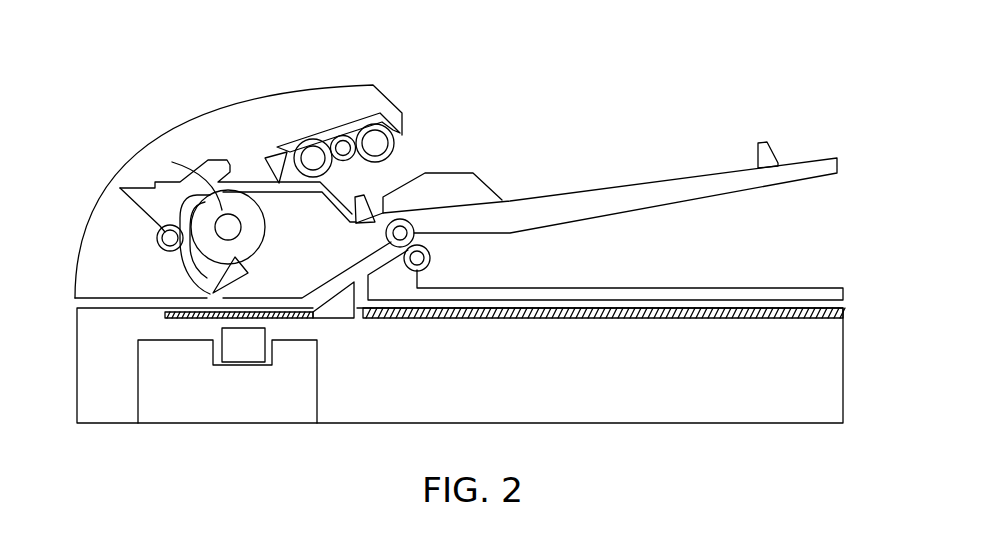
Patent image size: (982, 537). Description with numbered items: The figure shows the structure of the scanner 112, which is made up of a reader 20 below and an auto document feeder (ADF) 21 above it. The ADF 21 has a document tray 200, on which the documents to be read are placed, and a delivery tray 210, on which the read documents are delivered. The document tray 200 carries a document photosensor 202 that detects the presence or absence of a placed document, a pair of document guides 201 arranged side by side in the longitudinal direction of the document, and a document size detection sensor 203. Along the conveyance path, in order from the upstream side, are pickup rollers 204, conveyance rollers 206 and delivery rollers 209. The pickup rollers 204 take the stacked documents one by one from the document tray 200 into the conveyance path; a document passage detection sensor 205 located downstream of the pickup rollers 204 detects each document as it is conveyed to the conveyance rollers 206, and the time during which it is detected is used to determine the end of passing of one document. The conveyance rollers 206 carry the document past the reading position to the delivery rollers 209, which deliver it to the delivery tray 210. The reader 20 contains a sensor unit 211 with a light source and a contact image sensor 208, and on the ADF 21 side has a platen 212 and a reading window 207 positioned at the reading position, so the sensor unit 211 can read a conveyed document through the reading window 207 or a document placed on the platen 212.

The scanner 112 is at (590, 63).
The auto document feeder (ADF) 21 is at (103, 195).
The reader 20 is at (848, 373).
The document tray 200 is at (650, 180).
The document guides 201 is at (487, 175).
The document photosensor 202 is at (366, 196).
The document size detection sensor 203 is at (770, 145).
The pickup rollers 204 is at (313, 150).
The document passage detection sensor 205 is at (272, 157).
The conveyance rollers 206 is at (182, 185).
The reading window 207 is at (165, 318).
The contact image sensor (CIS) 208 is at (243, 355).
The delivery rollers 209 is at (420, 237).
The delivery tray 210 is at (790, 287).
The sensor unit 211 is at (318, 380).
The platen 212 is at (844, 312).